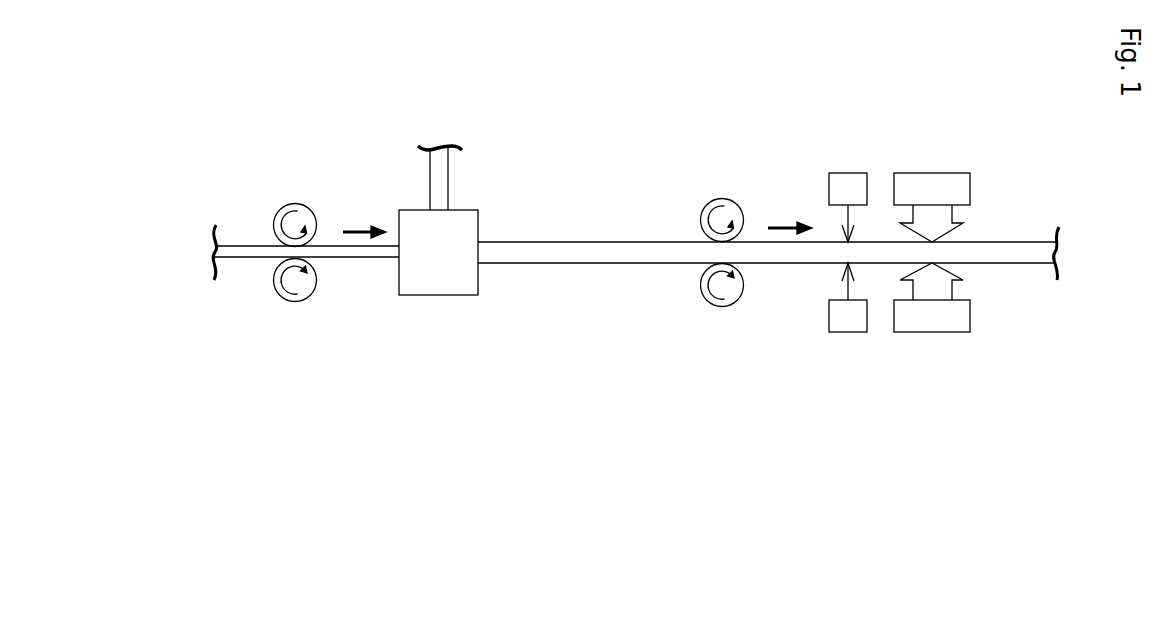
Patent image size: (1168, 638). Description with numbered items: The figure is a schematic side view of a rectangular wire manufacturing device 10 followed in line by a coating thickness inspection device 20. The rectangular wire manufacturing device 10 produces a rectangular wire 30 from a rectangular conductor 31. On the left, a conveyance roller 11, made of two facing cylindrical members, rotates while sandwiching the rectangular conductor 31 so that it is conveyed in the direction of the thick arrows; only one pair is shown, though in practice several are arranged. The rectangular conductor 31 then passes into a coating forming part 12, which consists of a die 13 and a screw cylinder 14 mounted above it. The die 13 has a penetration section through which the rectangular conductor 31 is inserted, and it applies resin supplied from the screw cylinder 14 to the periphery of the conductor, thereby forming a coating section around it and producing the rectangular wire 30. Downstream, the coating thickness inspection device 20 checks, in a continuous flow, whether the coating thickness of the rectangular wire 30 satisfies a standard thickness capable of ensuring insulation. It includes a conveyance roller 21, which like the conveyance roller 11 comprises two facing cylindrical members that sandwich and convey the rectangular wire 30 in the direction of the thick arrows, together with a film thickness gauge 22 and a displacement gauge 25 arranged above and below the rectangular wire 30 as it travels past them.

The rectangular wire manufacturing device 10 is at (409, 244).
The conveyance roller 11 is at (297, 213).
The coating forming part 12 is at (471, 166).
The die 13 is at (468, 223).
The screw cylinder 14 is at (458, 154).
The coating thickness inspection device 20 is at (836, 273).
The conveyance roller 21 is at (717, 200).
The film thickness gauge 22 is at (843, 163).
The displacement gauge 25 is at (932, 162).
The rectangular wire 30 is at (638, 253).
The rectangular conductor 31 is at (238, 250).